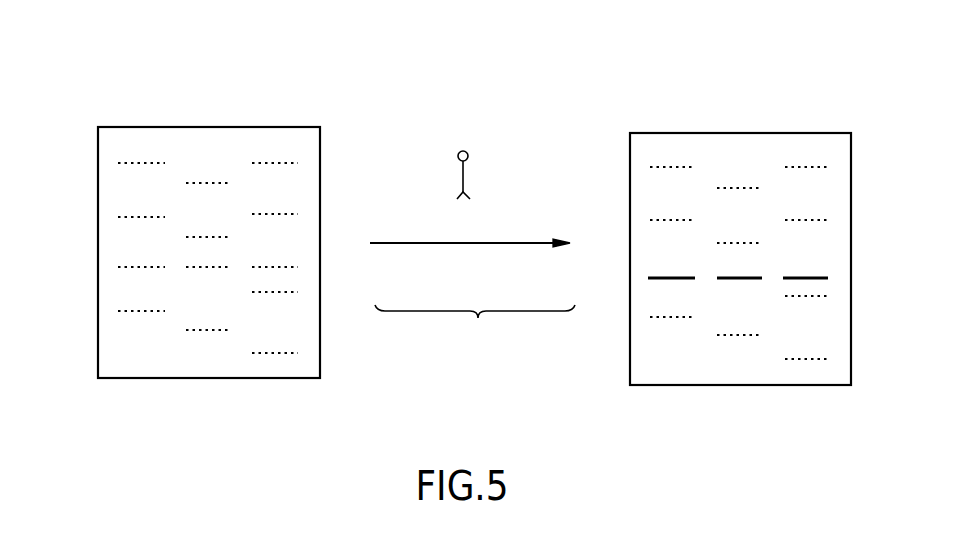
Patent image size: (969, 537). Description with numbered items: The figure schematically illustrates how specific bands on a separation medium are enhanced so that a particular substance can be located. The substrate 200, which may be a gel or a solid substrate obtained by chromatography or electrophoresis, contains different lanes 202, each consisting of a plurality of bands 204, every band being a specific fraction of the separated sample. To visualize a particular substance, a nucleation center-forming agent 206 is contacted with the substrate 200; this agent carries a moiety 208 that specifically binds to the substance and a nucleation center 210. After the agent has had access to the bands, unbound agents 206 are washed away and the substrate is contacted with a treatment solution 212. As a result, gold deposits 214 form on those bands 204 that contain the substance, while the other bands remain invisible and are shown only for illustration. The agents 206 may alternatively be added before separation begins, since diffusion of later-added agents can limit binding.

The substrate 200 is at (202, 380).
The lanes 202 is at (135, 100).
The bands 204 is at (133, 218).
The nucleation center-forming agent 206 is at (466, 174).
The moiety 208 is at (463, 203).
The nucleation center 210 is at (467, 149).
The treatment solution 212 is at (476, 306).
The gold deposits 214 is at (802, 276).